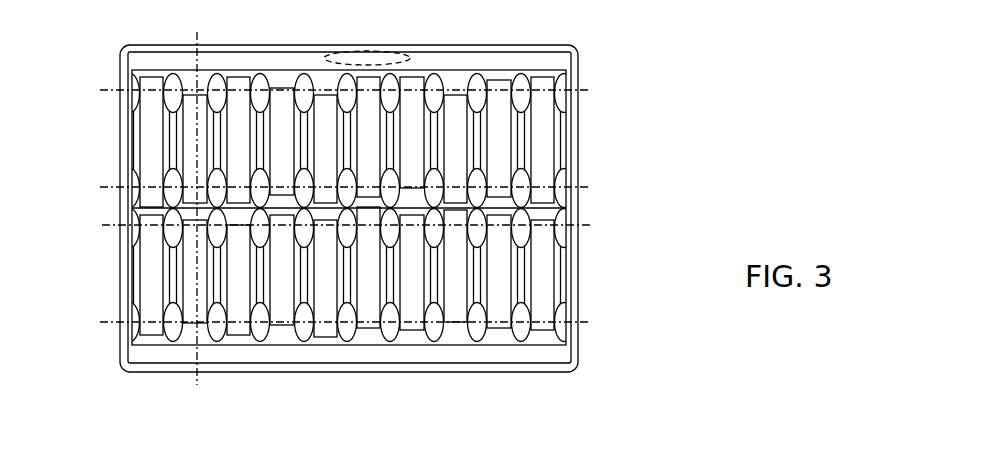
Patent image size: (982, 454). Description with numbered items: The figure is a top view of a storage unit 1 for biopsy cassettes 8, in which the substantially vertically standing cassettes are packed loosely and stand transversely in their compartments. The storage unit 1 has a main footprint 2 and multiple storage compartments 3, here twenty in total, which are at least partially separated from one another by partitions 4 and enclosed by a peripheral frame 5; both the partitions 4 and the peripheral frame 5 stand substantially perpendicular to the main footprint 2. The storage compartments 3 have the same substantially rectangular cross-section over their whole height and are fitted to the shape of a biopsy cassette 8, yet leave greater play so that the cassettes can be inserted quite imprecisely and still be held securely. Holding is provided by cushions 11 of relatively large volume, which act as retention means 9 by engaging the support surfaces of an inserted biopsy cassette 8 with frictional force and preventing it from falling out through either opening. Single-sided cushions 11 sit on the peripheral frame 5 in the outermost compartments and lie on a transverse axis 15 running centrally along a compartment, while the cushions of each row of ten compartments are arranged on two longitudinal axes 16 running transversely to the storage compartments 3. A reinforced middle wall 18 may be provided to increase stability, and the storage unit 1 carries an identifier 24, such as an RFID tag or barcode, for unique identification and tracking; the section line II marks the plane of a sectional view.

The storage unit 1 is at (716, 57).
The main footprint 2 is at (578, 330).
The storage compartment 3 is at (549, 292).
The partition 4 is at (173, 283).
The peripheral frame 5 is at (132, 170).
The biopsy cassette 8 is at (537, 138).
The retention means 9 is at (512, 330).
The cushion 11 is at (168, 104).
The transverse axis 15 is at (197, 32).
The longitudinal axis 16 is at (586, 92).
The reinforced middle wall 18 is at (273, 192).
The identifier 24 is at (397, 52).
The section line II is at (523, 80).